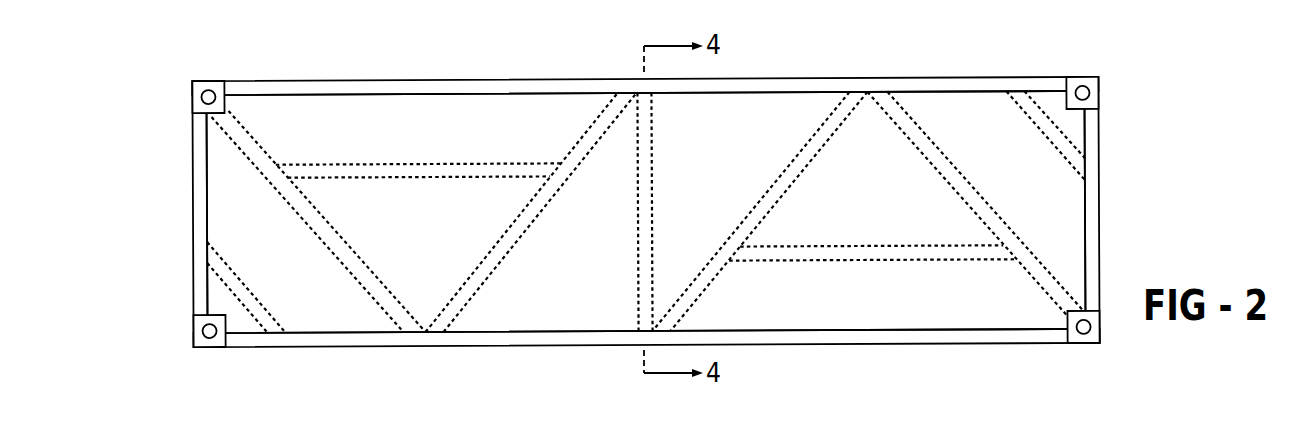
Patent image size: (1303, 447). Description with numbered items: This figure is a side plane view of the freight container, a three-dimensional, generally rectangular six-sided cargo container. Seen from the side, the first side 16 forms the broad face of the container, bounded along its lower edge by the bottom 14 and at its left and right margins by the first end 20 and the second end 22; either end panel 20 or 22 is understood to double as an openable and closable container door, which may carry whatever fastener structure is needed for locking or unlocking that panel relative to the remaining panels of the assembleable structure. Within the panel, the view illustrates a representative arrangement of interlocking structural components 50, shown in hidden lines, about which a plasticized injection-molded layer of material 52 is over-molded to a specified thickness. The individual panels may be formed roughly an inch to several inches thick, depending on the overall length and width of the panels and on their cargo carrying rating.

The bottom 14 is at (366, 347).
The first side 16 is at (752, 121).
The first end 20 is at (192, 227).
The second end 22 is at (1100, 190).
The interlocking structural components 50 is at (266, 152).
The plasticized (PIM) layer of material 52 is at (368, 115).